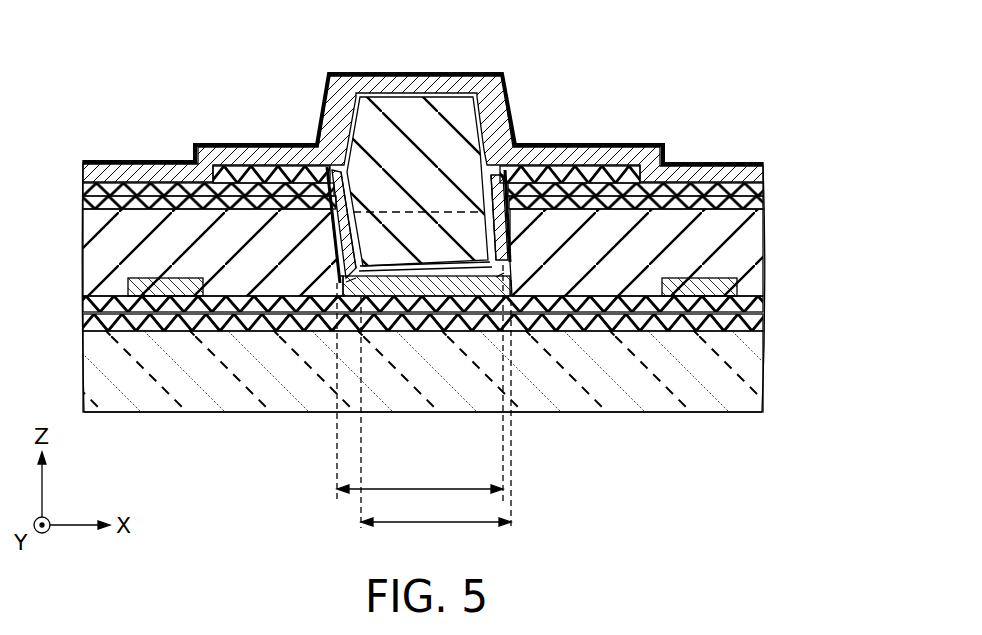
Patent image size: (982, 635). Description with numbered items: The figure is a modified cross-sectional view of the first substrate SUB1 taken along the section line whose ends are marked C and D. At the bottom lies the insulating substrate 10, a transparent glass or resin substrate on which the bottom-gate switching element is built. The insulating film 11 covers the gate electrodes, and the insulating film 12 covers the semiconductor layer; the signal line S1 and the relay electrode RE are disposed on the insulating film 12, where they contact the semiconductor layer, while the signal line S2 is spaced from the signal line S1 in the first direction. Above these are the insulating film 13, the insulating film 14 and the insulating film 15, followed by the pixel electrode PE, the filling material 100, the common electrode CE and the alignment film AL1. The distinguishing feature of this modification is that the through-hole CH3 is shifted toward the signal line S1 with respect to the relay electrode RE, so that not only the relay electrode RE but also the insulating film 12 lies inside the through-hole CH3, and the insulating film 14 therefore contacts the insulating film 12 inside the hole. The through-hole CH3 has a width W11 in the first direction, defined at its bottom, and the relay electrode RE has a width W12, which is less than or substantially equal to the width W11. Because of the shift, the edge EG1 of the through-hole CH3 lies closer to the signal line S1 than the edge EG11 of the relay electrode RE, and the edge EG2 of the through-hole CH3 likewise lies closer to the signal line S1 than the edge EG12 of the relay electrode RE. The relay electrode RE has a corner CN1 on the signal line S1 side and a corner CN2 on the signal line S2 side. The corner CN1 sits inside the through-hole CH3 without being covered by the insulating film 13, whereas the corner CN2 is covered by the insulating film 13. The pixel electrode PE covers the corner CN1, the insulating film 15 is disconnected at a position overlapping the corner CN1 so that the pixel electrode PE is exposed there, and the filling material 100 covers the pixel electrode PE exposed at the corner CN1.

The first substrate SUB1 is at (755, 118).
The alignment film AL1 is at (762, 162).
The common electrode CE is at (757, 174).
The pixel electrode PE is at (594, 170).
The insulating film 15 is at (758, 189).
The insulating film 14 is at (758, 203).
The insulating film 13 is at (748, 246).
The insulating film 12 is at (757, 305).
The insulating film 11 is at (757, 325).
The insulating substrate 10 is at (745, 375).
The filling material 100 is at (444, 115).
The through-hole CH3 is at (392, 212).
The corner CN1 is at (350, 282).
The corner CN2 is at (500, 280).
The relay electrode RE is at (403, 292).
The signal line S1 is at (168, 288).
The signal line S2 is at (708, 290).
The edge EG1 is at (312, 298).
The edge EG2 is at (497, 285).
The edge EG11 is at (352, 298).
The edge EG12 is at (500, 282).
The width W11 is at (420, 383).
The width W12 is at (436, 404).
The line C-D endpoint C is at (77, 83).
The line C-D endpoint D is at (761, 83).